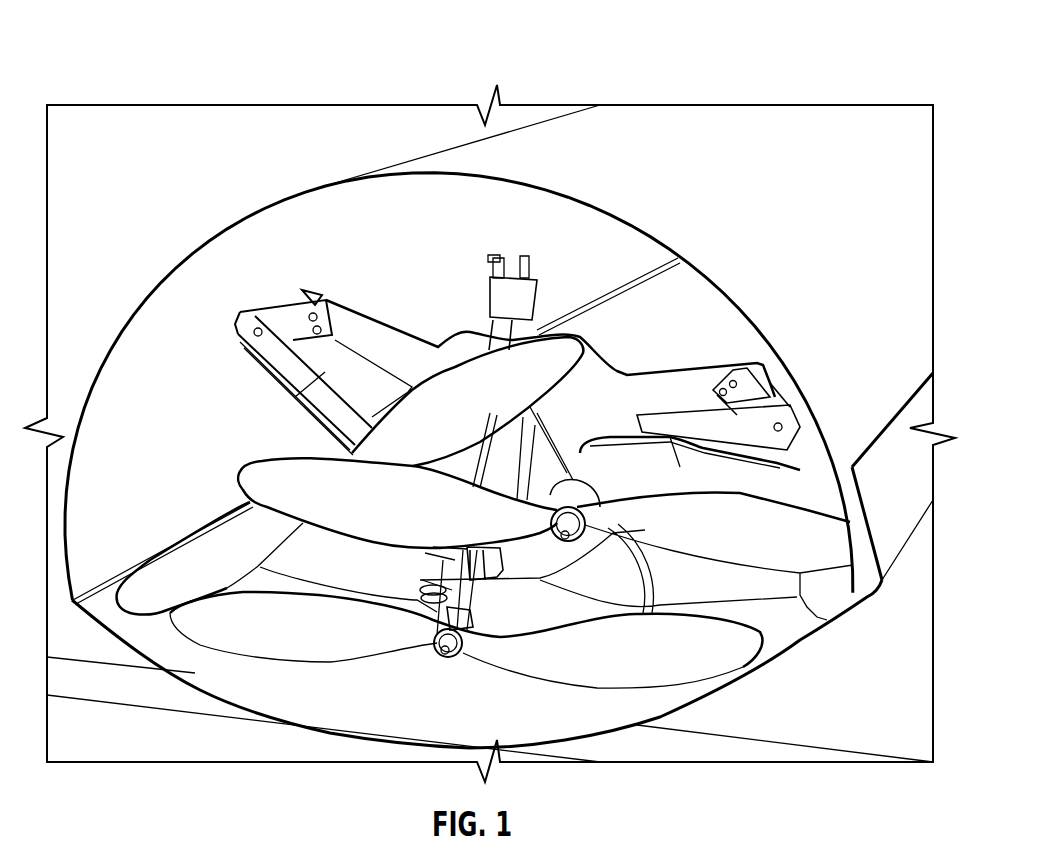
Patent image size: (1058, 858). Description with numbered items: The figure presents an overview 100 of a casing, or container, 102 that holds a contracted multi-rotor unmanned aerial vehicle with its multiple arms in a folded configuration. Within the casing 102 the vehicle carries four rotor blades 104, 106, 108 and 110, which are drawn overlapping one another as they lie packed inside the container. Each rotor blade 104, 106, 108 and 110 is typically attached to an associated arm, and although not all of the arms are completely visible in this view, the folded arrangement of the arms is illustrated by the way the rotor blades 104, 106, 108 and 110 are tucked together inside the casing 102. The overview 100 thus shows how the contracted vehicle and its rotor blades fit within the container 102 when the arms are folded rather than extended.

The overview 100 is at (801, 54).
The casing 102 is at (575, 195).
The rotor blade 104 is at (725, 658).
The rotor blade 106 is at (388, 518).
The rotor blade 108 is at (170, 600).
The rotor blade 110 is at (797, 597).